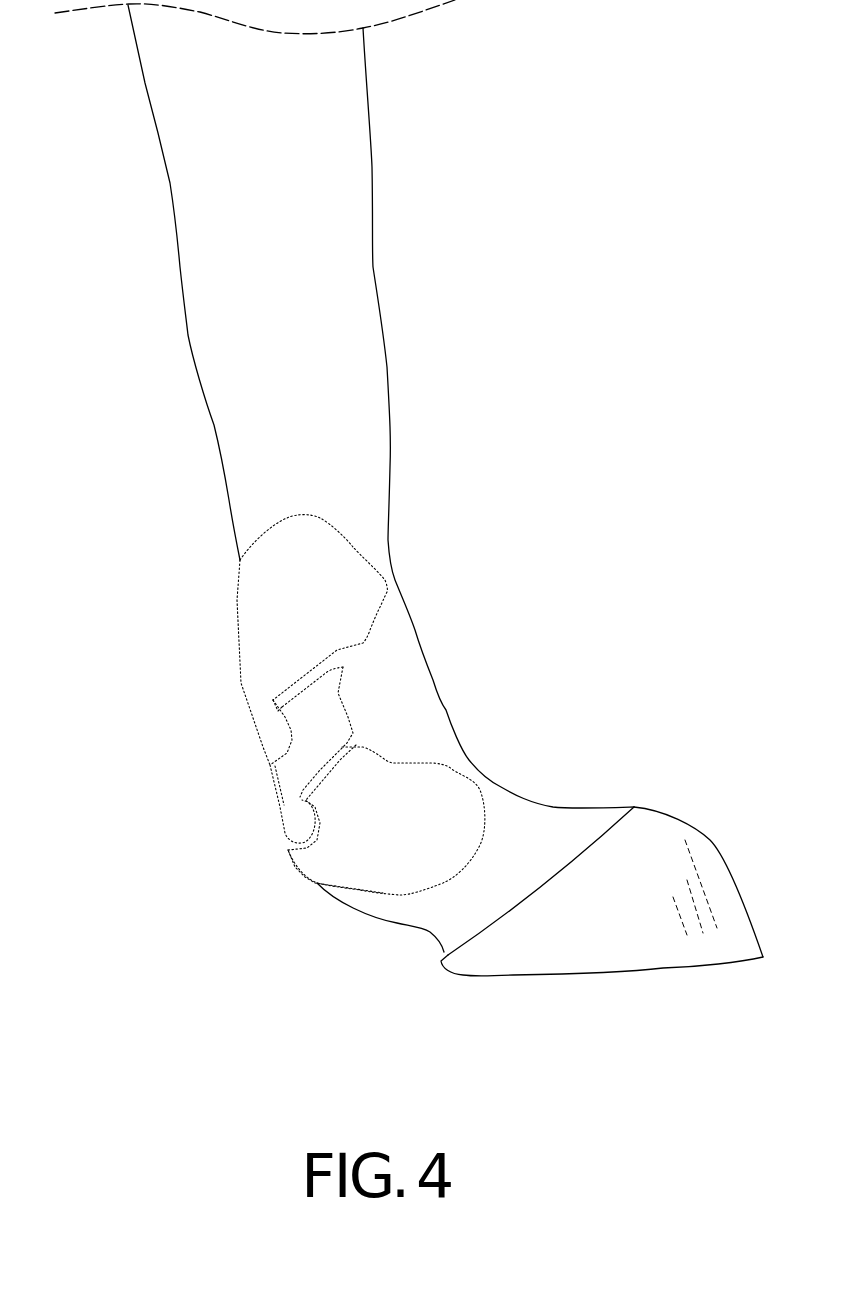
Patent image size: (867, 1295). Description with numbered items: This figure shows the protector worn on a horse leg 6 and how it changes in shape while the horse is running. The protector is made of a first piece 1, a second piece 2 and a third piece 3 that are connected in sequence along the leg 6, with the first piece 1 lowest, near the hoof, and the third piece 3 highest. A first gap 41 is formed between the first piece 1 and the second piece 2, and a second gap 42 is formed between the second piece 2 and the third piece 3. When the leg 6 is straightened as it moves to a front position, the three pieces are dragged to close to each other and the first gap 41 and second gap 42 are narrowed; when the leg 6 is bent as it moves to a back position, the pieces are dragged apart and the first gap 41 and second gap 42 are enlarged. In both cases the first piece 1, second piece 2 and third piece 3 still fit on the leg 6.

The first piece 1 is at (360, 880).
The second piece 2 is at (288, 790).
The third piece 3 is at (252, 637).
The first gap 41 is at (340, 752).
The second gap 42 is at (325, 665).
The leg 6 is at (363, 353).